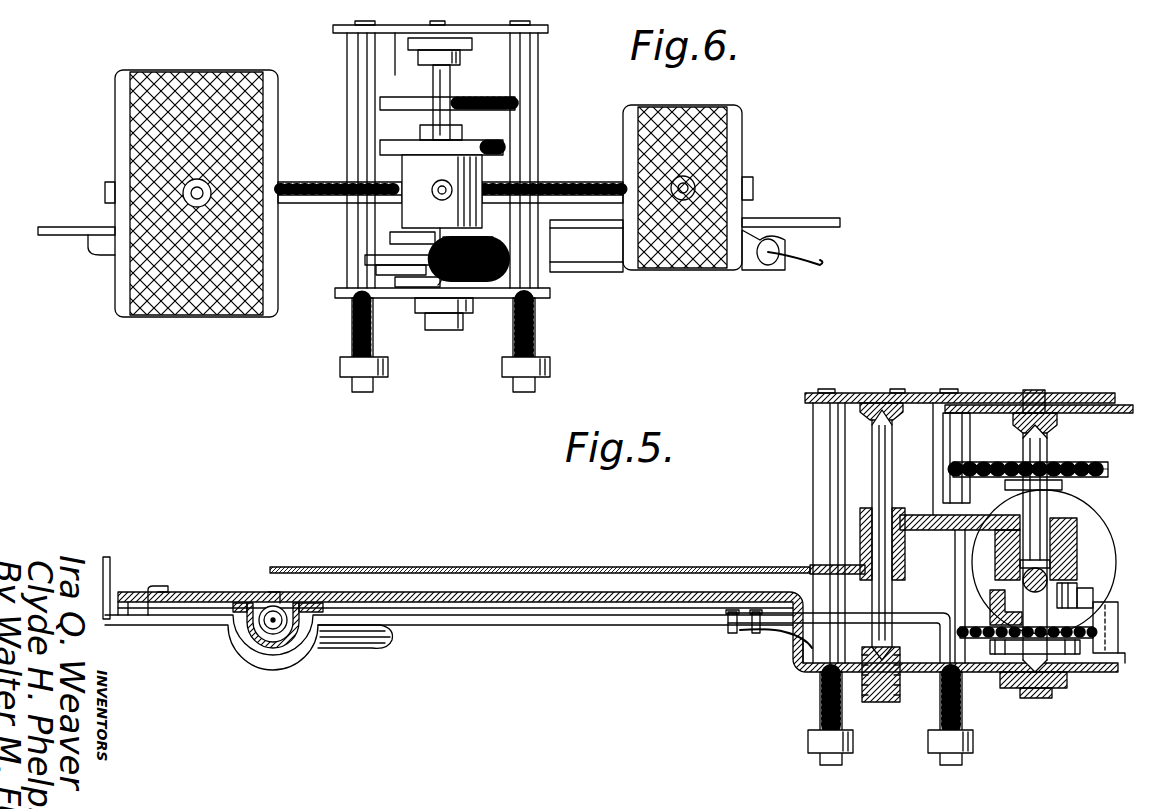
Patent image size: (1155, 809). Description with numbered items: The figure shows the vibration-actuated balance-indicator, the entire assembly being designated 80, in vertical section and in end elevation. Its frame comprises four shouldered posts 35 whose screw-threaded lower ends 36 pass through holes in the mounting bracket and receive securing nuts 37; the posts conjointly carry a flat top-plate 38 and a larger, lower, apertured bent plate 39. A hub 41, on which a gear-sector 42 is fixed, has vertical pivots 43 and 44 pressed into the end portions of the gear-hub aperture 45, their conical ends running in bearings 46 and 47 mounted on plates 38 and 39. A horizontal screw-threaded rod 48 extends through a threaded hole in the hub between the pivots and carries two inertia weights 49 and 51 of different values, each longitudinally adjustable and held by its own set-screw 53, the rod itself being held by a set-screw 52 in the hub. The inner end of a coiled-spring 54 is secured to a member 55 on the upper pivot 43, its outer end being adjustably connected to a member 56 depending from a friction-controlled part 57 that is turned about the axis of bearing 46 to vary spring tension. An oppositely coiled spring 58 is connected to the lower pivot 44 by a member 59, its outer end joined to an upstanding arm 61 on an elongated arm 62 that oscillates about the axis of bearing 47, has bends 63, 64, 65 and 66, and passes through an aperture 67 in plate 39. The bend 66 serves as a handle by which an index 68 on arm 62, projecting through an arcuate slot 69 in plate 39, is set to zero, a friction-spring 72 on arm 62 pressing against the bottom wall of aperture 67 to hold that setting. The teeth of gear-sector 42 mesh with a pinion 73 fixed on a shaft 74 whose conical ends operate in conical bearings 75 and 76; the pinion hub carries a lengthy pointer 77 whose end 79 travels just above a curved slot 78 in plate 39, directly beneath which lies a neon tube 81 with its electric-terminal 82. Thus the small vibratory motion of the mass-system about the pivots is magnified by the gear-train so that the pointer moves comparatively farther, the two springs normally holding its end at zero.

In FIG. 6, the shouldered post 35 is at (350, 118).
In FIG. 5, the shouldered post 35 is at (822, 468).
In FIG. 6, the screw-threaded lower end 36 is at (350, 340).
In FIG. 5, the screw-threaded lower end 36 is at (820, 715).
In FIG. 6, the securing nut 37 is at (364, 385).
In FIG. 5, the securing nut 37 is at (935, 722).
In FIG. 6, the top-plate 38 is at (407, 63).
In FIG. 5, the top-plate 38 is at (933, 395).
In FIG. 6, the bent plate 39 is at (395, 296).
In FIG. 5, the bent plate 39 is at (615, 607).
In FIG. 5, the hub 41 is at (1105, 622).
In FIG. 6, the gear-sector 42 is at (505, 147).
In FIG. 5, the gear-sector 42 is at (925, 515).
In FIG. 5, the upper pivot 43 is at (1075, 505).
In FIG. 5, the lower pivot 44 is at (1030, 612).
In FIG. 5, the gear-hub aperture 45 is at (1030, 560).
In FIG. 6, the upper bearing 46 is at (465, 58).
In FIG. 5, the upper bearing 46 is at (1035, 392).
In FIG. 6, the lower bearing 47 is at (448, 322).
In FIG. 5, the lower bearing 47 is at (1018, 700).
In FIG. 6, the screw-threaded rod 48 is at (313, 180).
In FIG. 5, the screw-threaded rod 48 is at (1080, 565).
In FIG. 6, the inertia weight 49 is at (660, 270).
In FIG. 5, the inertia weight 49 is at (1105, 552).
In FIG. 6, the inertia weight 51 is at (195, 308).
In FIG. 6, the set-screw 52 is at (440, 188).
In FIG. 5, the set-screw 52 is at (1085, 590).
In FIG. 6, the set-screw 53 is at (190, 190).
In FIG. 6, the coiled-spring 54 is at (515, 103).
In FIG. 5, the coiled-spring 54 is at (1080, 462).
In FIG. 5, the member 55 is at (1065, 480).
In FIG. 5, the depending member 56 is at (955, 447).
In FIG. 6, the friction-controlled part 57 is at (462, 35).
In FIG. 5, the friction-controlled part 57 is at (990, 405).
In FIG. 6, the oppositely coiled spring 58 is at (500, 265).
In FIG. 5, the oppositely coiled spring 58 is at (983, 652).
In FIG. 5, the member 59 is at (1020, 585).
In FIG. 6, the upstanding arm 61 is at (438, 222).
In FIG. 5, the upstanding arm 61 is at (1118, 655).
In FIG. 5, the elongated arm 62 is at (522, 626).
In FIG. 5, the bend 63 is at (950, 645).
In FIG. 5, the bend 64 is at (800, 672).
In FIG. 5, the bend 65 is at (258, 655).
In FIG. 5, the handle 66 is at (105, 557).
In FIG. 5, the aperture 67 is at (780, 630).
In FIG. 5, the index 68 is at (158, 587).
In FIG. 5, the arcuate slot 69 is at (152, 605).
In FIG. 5, the friction-spring 72 is at (740, 640).
In FIG. 5, the pinion 73 is at (860, 518).
In FIG. 5, the shaft 74 is at (872, 447).
In FIG. 5, the conical bearing 75 is at (880, 403).
In FIG. 5, the conical bearing 76 is at (882, 702).
In FIG. 5, the pointer 77 is at (517, 567).
In FIG. 5, the curved slot 78 is at (272, 597).
In FIG. 5, the pointer end 79 is at (283, 567).
In FIG. 6, the indicator assembly 80 is at (347, 72).
In FIG. 5, the indicator assembly 80 is at (590, 580).
In FIG. 6, the neon tube 81 is at (770, 243).
In FIG. 5, the neon tube 81 is at (290, 640).
In FIG. 6, the electric-terminal 82 is at (812, 268).